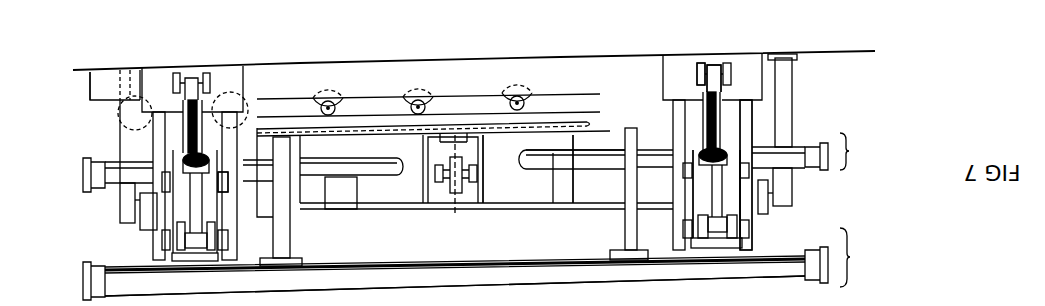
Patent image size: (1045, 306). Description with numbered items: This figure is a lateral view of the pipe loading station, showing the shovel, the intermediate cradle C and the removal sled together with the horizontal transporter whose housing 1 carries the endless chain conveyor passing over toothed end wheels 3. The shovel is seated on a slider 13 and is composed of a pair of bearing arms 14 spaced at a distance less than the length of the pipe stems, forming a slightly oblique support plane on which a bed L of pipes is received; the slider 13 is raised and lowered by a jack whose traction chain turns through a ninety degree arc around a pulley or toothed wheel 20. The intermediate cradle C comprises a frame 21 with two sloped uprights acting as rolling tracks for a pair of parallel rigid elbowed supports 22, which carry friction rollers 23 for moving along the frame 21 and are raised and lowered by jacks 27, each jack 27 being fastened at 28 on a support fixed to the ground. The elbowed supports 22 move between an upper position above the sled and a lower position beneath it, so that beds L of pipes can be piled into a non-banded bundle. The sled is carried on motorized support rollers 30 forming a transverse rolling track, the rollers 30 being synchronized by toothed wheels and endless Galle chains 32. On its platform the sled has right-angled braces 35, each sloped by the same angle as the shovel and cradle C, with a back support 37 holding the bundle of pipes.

The housing 1 is at (530, 170).
The toothed end wheels 3 is at (770, 205).
The slider 13 is at (300, 227).
The bearing arms 14 is at (620, 244).
The pulley or toothed wheel 20 is at (455, 203).
The frame 21 is at (752, 128).
The elbowed supports 22 is at (703, 192).
The friction rollers 23 is at (231, 187).
The jack 27 is at (720, 102).
The fastening point 28 is at (699, 70).
The rollers 30 is at (122, 128).
The endless Galle chains 32 is at (101, 124).
The right-angled brace 35 is at (363, 192).
The back support 37 is at (570, 193).
The intermediate cradle C is at (149, 246).
The bed of pipes L is at (472, 216).